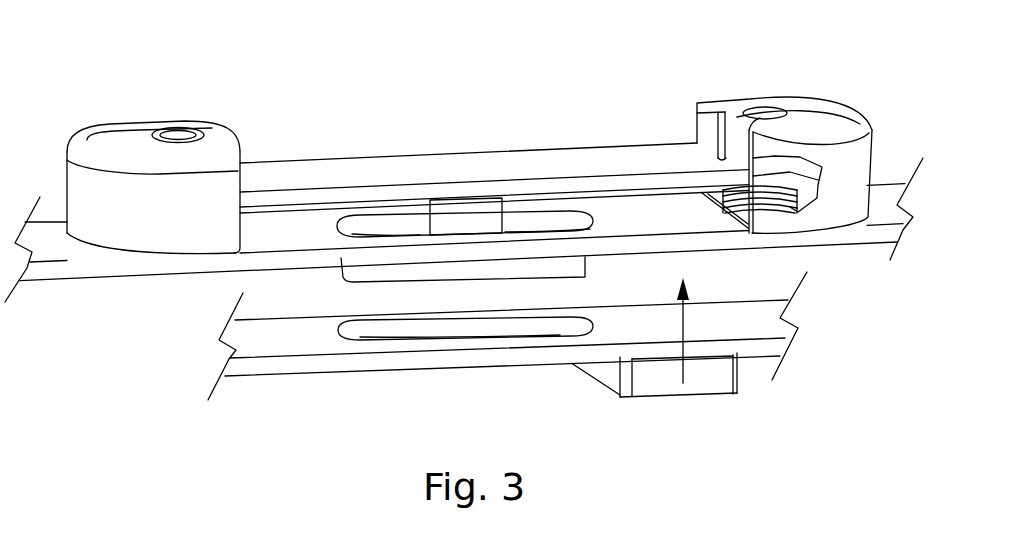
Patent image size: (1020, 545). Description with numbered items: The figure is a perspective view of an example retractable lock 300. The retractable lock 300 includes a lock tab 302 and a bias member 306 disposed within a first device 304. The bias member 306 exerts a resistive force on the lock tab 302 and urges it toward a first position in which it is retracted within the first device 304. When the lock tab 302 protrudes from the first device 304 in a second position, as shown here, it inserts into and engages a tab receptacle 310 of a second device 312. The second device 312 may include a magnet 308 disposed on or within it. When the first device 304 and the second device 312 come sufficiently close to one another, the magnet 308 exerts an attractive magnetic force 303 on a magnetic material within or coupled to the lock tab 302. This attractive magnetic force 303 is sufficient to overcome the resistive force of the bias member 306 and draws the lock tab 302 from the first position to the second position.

The retractable lock 300 is at (143, 82).
The lock tab 302 is at (482, 270).
The attractive magnetic force 303 is at (686, 314).
The first device 304 is at (88, 255).
The bias member 306 is at (800, 213).
The magnet 308 is at (717, 380).
The tab receptacle 310 is at (380, 332).
The second device 312 is at (268, 365).